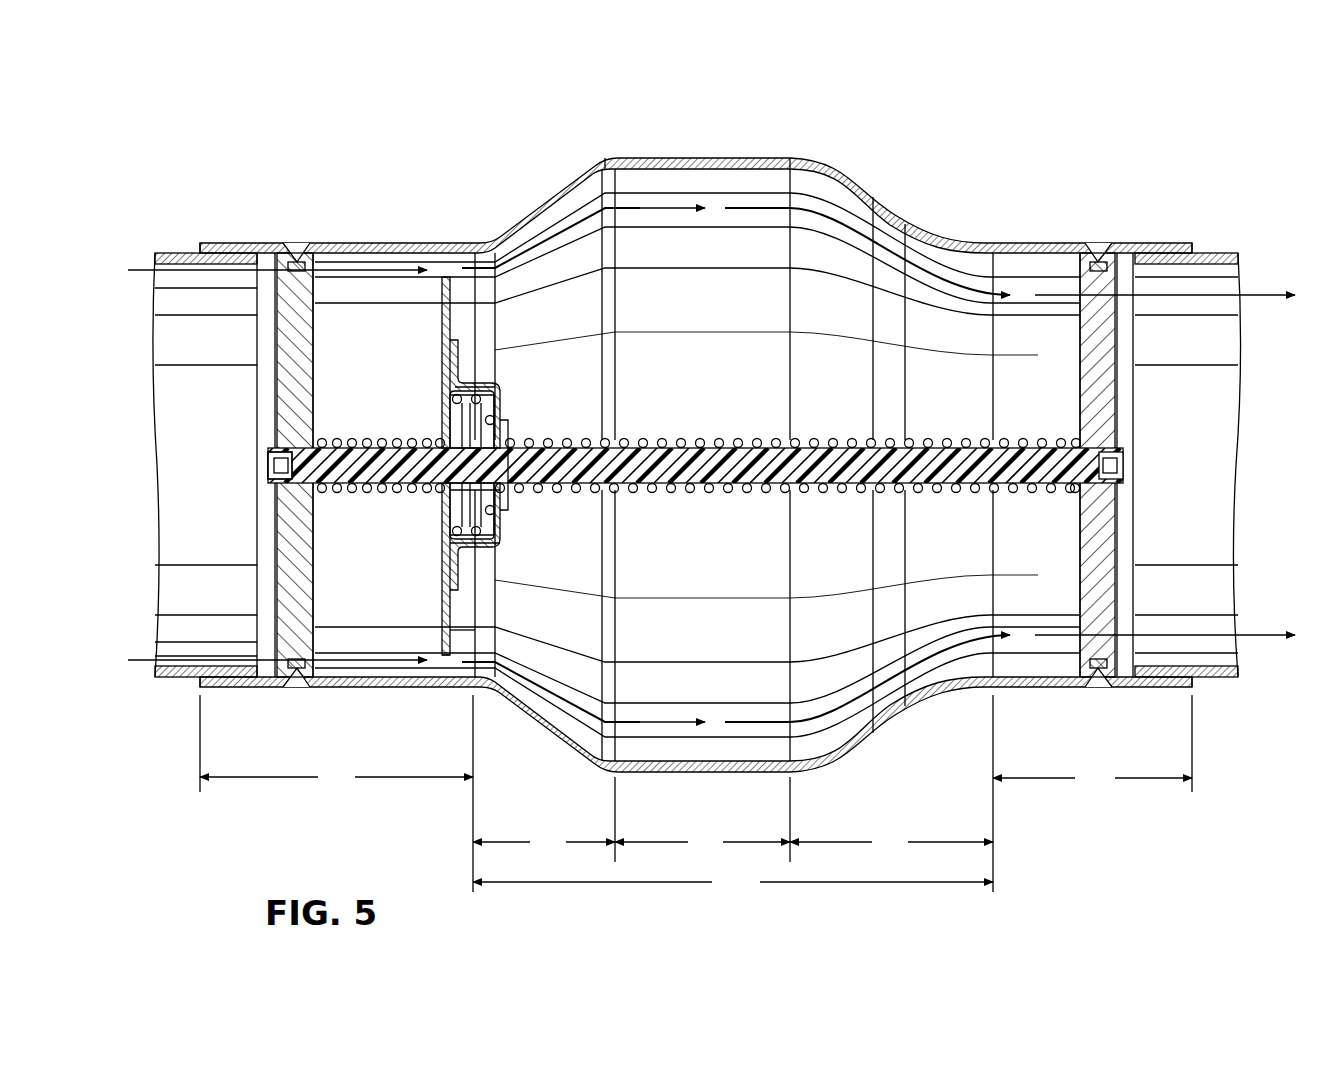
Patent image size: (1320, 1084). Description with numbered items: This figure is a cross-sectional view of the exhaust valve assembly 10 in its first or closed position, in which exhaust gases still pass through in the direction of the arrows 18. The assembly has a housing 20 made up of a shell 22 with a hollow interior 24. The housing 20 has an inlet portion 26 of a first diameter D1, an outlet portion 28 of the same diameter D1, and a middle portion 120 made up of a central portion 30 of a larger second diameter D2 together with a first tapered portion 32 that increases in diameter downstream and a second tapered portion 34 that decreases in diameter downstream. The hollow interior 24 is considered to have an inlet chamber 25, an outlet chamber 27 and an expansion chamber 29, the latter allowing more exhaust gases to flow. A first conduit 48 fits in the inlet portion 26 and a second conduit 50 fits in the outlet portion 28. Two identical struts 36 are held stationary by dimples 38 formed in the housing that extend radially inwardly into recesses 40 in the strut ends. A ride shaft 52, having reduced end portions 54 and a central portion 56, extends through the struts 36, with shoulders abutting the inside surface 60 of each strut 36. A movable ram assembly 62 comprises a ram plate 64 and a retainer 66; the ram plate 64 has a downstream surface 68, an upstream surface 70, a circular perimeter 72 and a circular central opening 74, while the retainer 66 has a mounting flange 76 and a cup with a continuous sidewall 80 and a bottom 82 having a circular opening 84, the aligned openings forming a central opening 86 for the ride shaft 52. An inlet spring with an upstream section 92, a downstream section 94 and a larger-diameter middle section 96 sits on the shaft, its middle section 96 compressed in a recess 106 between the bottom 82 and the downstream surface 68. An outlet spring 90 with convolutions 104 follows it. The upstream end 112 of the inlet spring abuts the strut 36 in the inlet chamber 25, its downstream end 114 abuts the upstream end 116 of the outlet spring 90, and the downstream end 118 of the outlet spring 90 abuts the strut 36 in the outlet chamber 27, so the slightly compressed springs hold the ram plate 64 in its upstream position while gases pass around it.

The exhaust valve assembly 10 is at (1053, 145).
The arrows 18 is at (142, 268).
The housing 20 is at (776, 157).
The shell 22 is at (729, 158).
The hollow interior 24 is at (736, 465).
The inlet chamber 25 is at (342, 406).
The inlet portion 26 is at (336, 793).
The outlet chamber 27 is at (1015, 388).
The outlet portion 28 is at (1092, 793).
The expansion chamber 29 is at (690, 318).
The central portion 30 is at (702, 819).
The first tapered portion 32 is at (544, 819).
The second tapered portion 34 is at (891, 842).
The strut 36 is at (295, 396).
The dimple 38 is at (299, 252).
The recess 40 is at (292, 250).
The first conduit 48 is at (205, 243).
The second conduit 50 is at (1210, 243).
The ride shaft 52 is at (664, 440).
The end portion 54 is at (275, 480).
The central portion 56 is at (745, 484).
The inside surface 60 is at (313, 322).
The ram assembly 62 is at (518, 502).
The ram plate 64 is at (440, 320).
The retainer 66 is at (510, 432).
The downstream surface 68 is at (470, 640).
The upstream surface 70 is at (440, 632).
The circular perimeter 72 is at (446, 686).
The circular central opening 74 is at (446, 500).
The mounting flange 76 is at (460, 360).
The sidewall 80 is at (490, 382).
The bottom 82 is at (503, 416).
The circular opening 84 is at (503, 520).
The central opening 86 is at (444, 430).
The outlet spring 90 is at (838, 440).
The upstream section 92 is at (443, 494).
The downstream section 94 is at (505, 494).
The middle section 96 is at (456, 562).
The convolutions 104 is at (937, 440).
The recess 106 is at (500, 398).
The upstream end 112 is at (290, 490).
The downstream end 114 is at (588, 496).
The upstream end 116 is at (598, 494).
The downstream end 118 is at (1076, 440).
The middle portion 120 is at (733, 882).
The first diameter D1 is at (366, 243).
The second diameter D2 is at (683, 157).